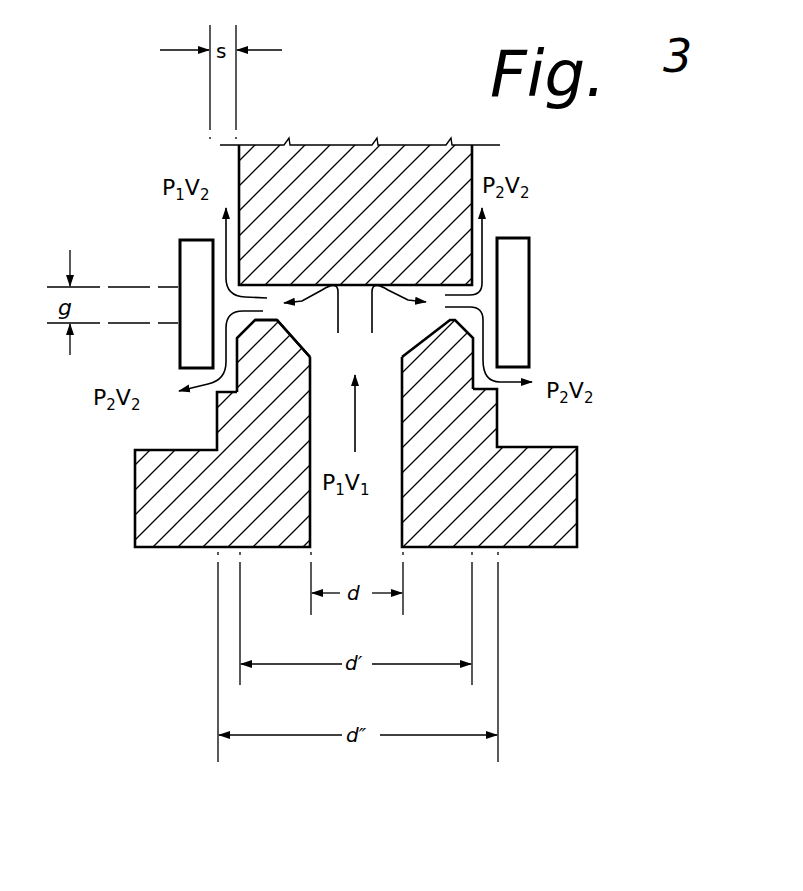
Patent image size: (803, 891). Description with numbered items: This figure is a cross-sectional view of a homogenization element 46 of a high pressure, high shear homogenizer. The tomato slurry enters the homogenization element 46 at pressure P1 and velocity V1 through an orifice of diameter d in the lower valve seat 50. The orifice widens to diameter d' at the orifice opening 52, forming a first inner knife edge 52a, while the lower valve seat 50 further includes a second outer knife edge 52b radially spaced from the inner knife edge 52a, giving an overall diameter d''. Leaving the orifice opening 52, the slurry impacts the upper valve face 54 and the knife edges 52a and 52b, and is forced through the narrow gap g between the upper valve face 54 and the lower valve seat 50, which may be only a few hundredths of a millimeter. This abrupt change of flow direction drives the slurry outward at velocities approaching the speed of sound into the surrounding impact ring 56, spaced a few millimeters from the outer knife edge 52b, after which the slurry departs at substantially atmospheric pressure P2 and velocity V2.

The homogenization element 46 is at (600, 207).
The lower valve seat 50 is at (135, 490).
The orifice opening 52 is at (389, 338).
The first inner knife edge 52a is at (278, 323).
The second outer knife edge 52b is at (262, 322).
The upper valve face 54 is at (426, 284).
The impact ring 56 is at (179, 248).